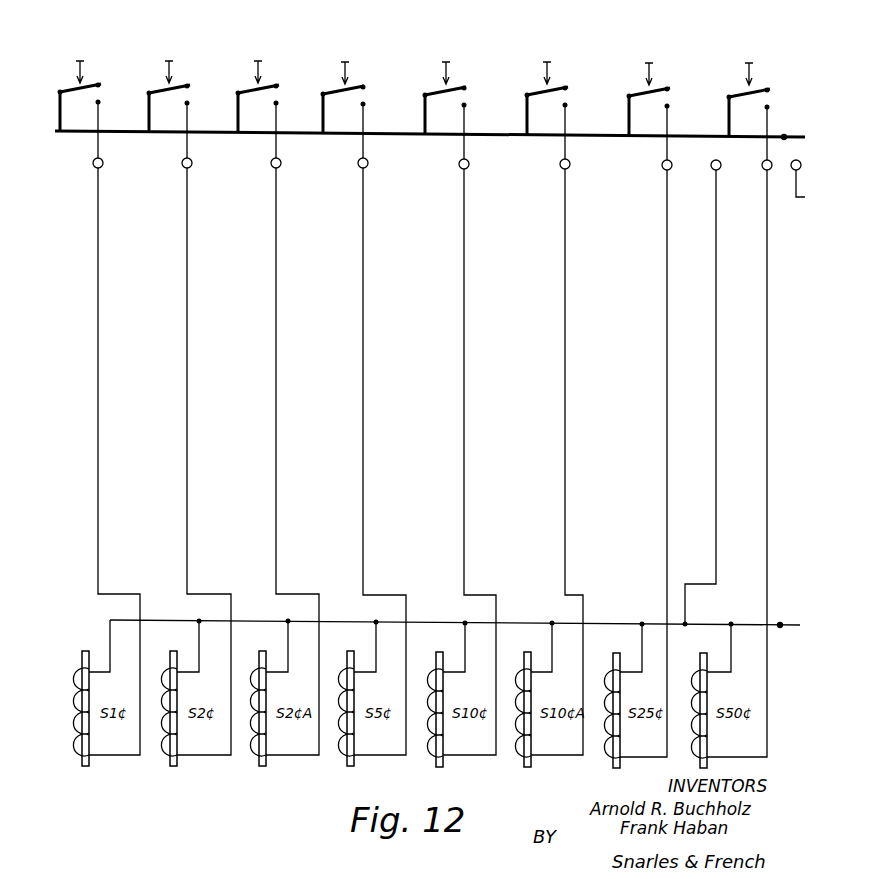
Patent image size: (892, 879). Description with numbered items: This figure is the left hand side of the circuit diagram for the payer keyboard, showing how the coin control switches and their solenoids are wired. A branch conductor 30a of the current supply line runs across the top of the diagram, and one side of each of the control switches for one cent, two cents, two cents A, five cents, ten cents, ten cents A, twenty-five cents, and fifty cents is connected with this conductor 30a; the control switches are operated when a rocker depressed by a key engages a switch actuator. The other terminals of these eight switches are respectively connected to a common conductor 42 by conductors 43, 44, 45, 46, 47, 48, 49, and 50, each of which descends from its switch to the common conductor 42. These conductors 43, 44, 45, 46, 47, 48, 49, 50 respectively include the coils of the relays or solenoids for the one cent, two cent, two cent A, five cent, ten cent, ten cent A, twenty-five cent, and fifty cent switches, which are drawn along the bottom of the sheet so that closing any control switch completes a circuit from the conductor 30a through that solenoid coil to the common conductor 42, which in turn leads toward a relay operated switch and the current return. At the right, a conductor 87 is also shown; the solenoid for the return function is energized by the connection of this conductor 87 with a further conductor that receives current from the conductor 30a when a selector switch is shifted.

The branch conductor 30a is at (586, 139).
The common conductor 42 is at (720, 622).
The conductor 43 is at (98, 535).
The conductor 44 is at (187, 535).
The conductor 45 is at (276, 535).
The conductor 46 is at (363, 535).
The conductor 47 is at (464, 535).
The conductor 48 is at (565, 535).
The conductor 49 is at (667, 535).
The conductor 50 is at (767, 535).
The conductor 87 is at (796, 197).